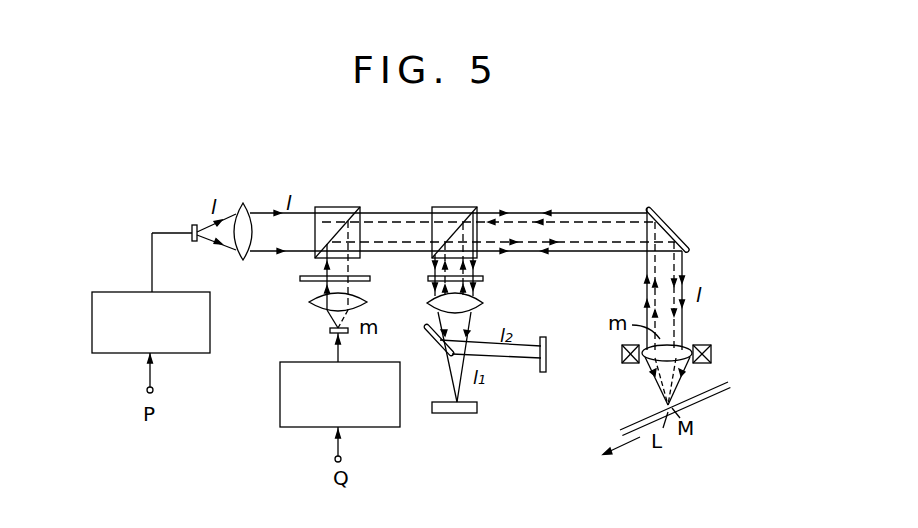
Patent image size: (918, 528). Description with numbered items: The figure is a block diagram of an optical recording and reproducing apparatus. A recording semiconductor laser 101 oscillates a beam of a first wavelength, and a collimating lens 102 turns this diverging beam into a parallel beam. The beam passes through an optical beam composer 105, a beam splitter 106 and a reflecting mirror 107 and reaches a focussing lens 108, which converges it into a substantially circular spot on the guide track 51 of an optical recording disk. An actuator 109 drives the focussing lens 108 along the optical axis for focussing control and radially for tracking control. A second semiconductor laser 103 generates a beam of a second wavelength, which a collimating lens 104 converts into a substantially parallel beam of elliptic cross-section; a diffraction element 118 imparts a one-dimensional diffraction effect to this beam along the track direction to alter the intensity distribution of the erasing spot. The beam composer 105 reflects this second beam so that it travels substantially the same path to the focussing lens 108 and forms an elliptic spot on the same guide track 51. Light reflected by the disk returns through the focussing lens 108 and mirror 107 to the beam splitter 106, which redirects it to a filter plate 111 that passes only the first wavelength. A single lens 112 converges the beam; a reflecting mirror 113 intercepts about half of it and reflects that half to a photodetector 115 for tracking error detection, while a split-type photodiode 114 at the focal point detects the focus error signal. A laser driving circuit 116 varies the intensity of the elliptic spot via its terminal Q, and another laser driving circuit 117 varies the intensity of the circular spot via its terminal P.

The recording semiconductor laser 101 is at (192, 226).
The collimating lens 102 is at (243, 203).
The semiconductor laser 103 is at (330, 331).
The collimating lens 104 is at (309, 302).
The optical beam composer 105 is at (335, 207).
The beam splitter 106 is at (455, 207).
The reflecting mirror 107 is at (671, 229).
The focussing lens 108 is at (680, 347).
The actuator 109 is at (711, 354).
The filter plate 111 is at (483, 278).
The single lens 112 is at (483, 303).
The reflecting mirror 113 is at (428, 333).
The split-type photodiode 114 is at (477, 407).
The photodetector 115 is at (546, 341).
The laser driving circuit 116 is at (280, 409).
The laser driving circuit 117 is at (112, 353).
The diffraction element 118 is at (356, 282).
The guide track 51 is at (720, 395).